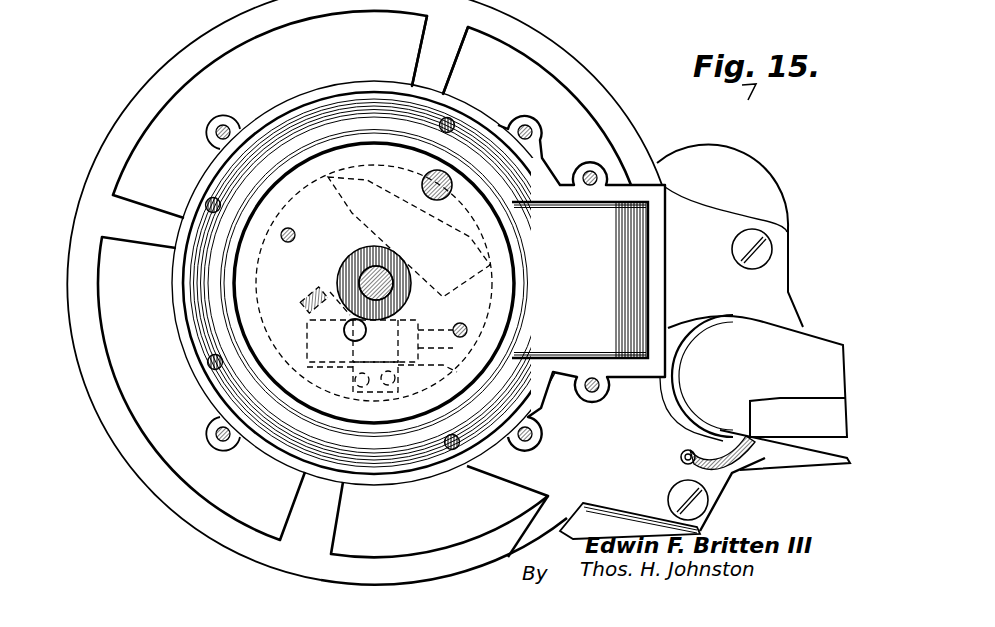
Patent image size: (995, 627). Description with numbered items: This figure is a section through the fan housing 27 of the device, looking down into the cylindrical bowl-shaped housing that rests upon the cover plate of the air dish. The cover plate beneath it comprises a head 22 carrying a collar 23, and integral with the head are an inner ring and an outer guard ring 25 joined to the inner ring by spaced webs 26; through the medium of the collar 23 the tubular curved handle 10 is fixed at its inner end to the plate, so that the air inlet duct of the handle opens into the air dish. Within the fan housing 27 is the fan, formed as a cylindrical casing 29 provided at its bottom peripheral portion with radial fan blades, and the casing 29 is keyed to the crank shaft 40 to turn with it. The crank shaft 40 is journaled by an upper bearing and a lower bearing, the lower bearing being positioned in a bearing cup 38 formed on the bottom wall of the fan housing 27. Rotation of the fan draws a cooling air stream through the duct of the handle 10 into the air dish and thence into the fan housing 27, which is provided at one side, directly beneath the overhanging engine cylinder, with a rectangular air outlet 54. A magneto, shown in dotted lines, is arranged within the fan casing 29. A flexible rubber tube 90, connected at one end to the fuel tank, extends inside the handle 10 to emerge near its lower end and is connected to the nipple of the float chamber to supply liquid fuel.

The curved handle 10 is at (807, 347).
The head 22 is at (707, 225).
The collar 23 is at (693, 323).
The outer guard ring 25 is at (587, 64).
The spaced webs 26 is at (445, 62).
The fan housing 27 is at (318, 105).
The cylindrical casing 29 is at (280, 430).
The bearing cup 38 is at (351, 212).
The crank shaft 40 is at (345, 272).
The rectangular air outlet 54 is at (650, 192).
The flexible tube 90 is at (681, 460).